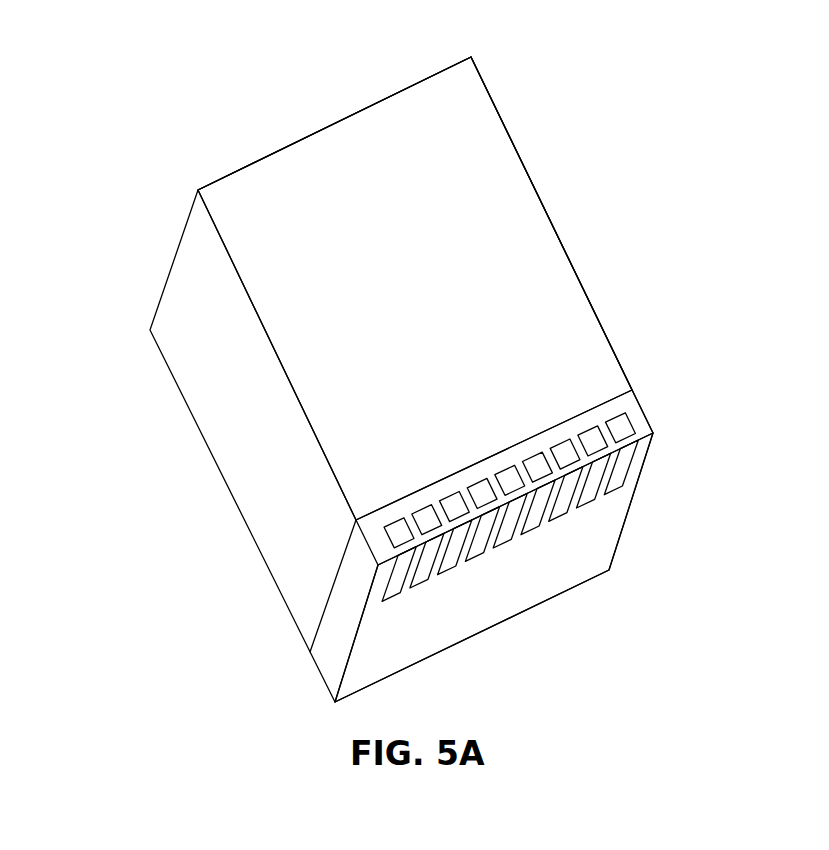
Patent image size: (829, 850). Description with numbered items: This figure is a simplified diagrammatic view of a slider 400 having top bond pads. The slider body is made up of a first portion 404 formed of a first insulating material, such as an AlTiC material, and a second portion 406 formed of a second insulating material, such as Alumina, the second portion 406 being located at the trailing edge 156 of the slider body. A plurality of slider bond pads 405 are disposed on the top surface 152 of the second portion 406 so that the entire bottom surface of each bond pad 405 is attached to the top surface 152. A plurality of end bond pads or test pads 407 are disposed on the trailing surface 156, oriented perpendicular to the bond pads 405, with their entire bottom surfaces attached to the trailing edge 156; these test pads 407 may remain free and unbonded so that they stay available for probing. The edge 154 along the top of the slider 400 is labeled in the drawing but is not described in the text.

The fluid product dispenser 400 is at (120, 86).
The top face 152 is at (415, 233).
The top edge wall 154 is at (275, 147).
The front face 156 is at (518, 599).
The side edge 404 is at (595, 355).
The openings 405 is at (590, 430).
The dividers 406 is at (638, 392).
The fins 407 is at (590, 490).